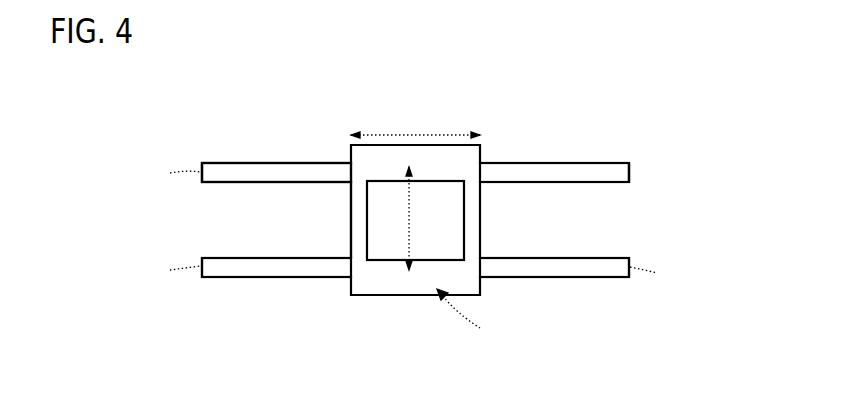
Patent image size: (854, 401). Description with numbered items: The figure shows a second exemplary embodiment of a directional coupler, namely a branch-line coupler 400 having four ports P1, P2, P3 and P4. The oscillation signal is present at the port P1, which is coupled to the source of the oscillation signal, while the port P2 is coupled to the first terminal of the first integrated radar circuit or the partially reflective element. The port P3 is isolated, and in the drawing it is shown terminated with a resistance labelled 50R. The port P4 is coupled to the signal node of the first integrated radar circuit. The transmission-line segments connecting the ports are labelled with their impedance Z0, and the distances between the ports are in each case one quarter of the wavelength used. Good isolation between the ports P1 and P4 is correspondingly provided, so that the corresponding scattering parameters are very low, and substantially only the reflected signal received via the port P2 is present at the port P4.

The branch-line coupler 400 is at (187, 386).
The 50 ohm termination resistor 50R is at (631, 172).
The characteristic impedance transmission line Z0 is at (292, 162).
The port P1 is at (276, 284).
The port P2 is at (554, 284).
The port P3 is at (554, 158).
The port P4 is at (276, 158).